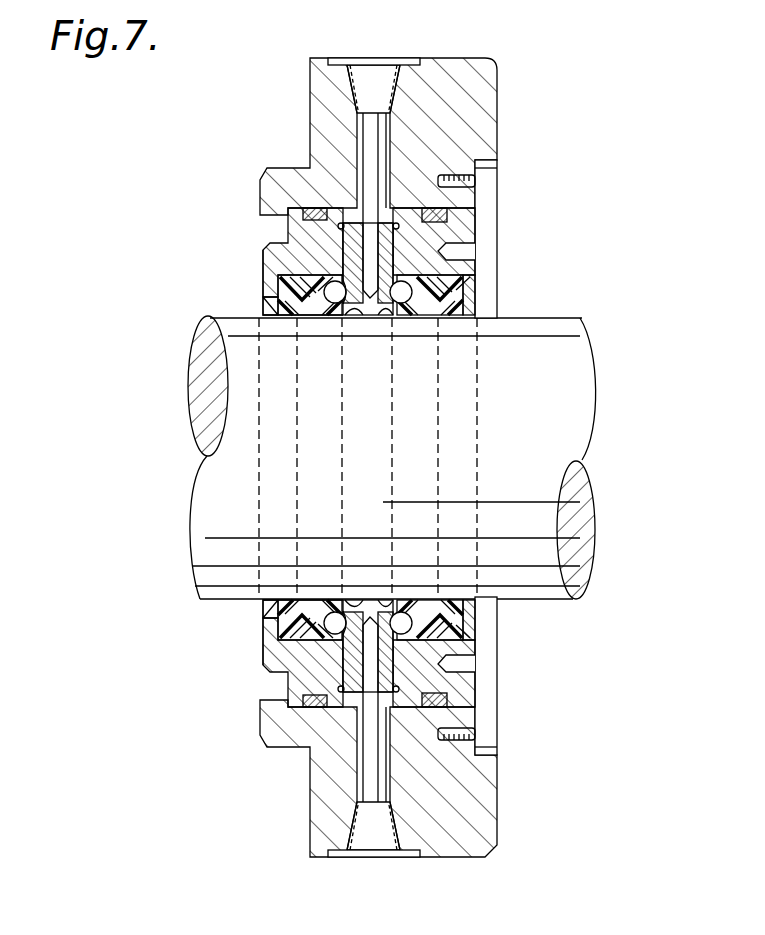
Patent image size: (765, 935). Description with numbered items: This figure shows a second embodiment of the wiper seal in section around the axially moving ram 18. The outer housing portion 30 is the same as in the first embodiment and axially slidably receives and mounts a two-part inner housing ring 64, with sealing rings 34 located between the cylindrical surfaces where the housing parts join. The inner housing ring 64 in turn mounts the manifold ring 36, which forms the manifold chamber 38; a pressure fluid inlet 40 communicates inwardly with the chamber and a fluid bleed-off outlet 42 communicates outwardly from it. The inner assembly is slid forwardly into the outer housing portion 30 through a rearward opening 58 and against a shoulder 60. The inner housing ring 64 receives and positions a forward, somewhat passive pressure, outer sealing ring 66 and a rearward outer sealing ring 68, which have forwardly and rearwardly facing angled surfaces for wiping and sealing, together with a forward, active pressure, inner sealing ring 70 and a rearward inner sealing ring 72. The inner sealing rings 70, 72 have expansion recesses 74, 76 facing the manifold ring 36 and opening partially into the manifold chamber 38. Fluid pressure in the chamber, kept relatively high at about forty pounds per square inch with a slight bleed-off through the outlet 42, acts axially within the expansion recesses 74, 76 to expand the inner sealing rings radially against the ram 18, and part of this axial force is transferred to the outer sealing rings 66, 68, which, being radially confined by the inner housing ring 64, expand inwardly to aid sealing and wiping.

The ram 18 is at (583, 398).
The outer housing portion 30 is at (322, 116).
The sealing rings 34 is at (302, 212).
The manifold ring 36 is at (372, 312).
The manifold chamber 38 is at (393, 314).
The pressure fluid inlet 40 is at (378, 72).
The fluid bleed-off outlet 42 is at (362, 845).
The rearward opening 58 is at (462, 214).
The shoulder 60 is at (275, 318).
The inner housing ring 64 is at (297, 234).
The first or forward outer sealing ring 66 is at (288, 220).
The second or rearward outer sealing ring 68 is at (470, 318).
The first or forward inner sealing ring 70 is at (312, 318).
The second or rearward inner sealing ring 72 is at (422, 318).
The expansion recess 74 is at (345, 290).
The expansion recess 76 is at (387, 268).